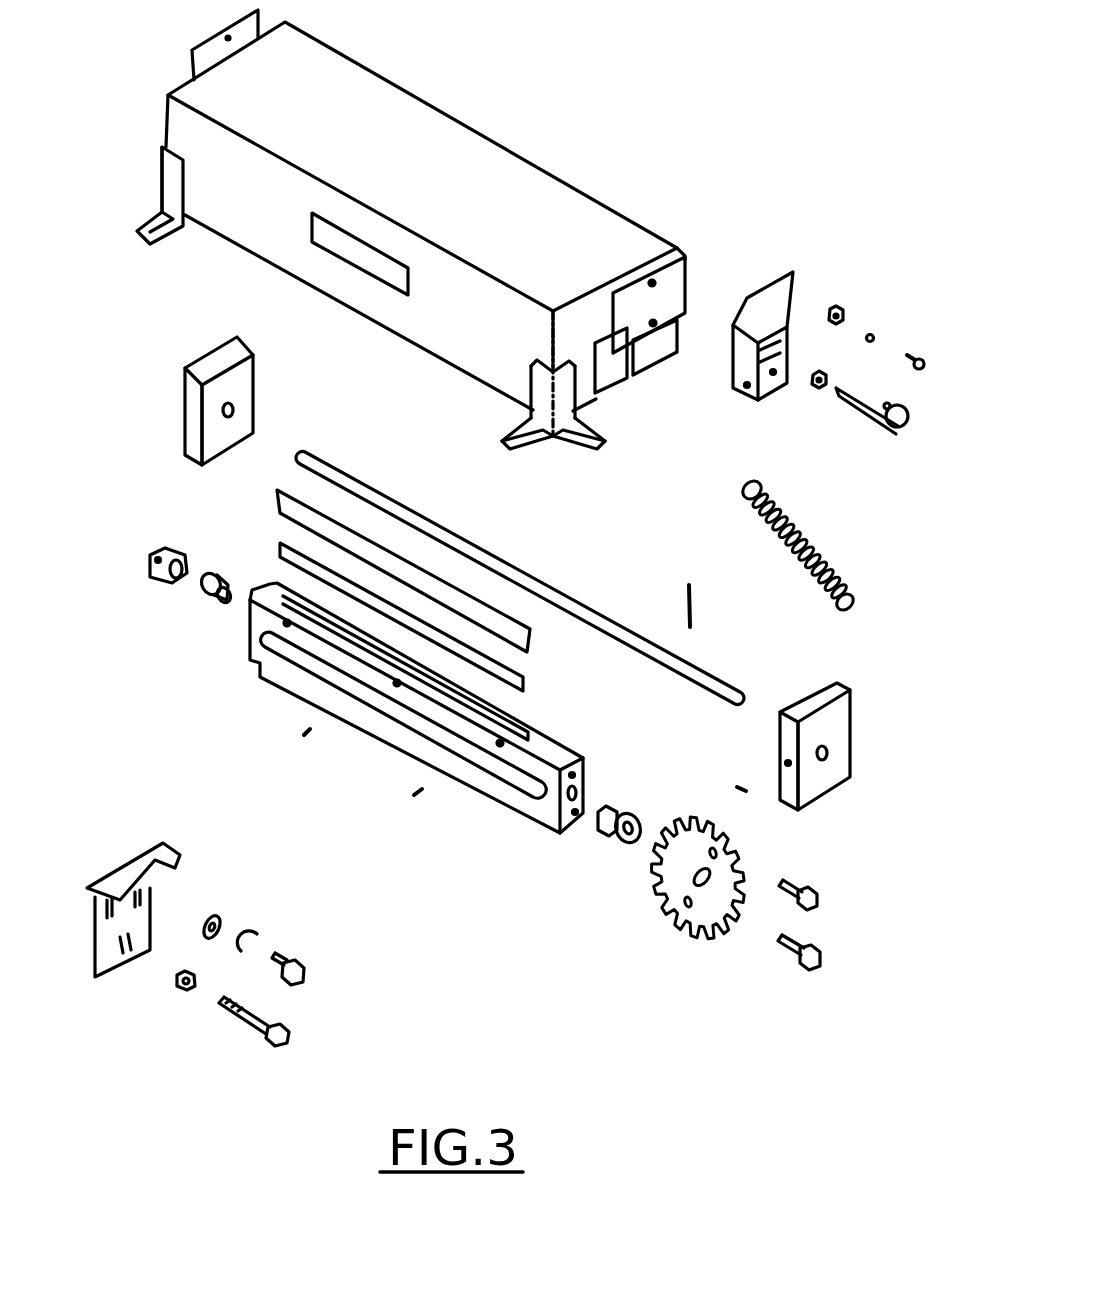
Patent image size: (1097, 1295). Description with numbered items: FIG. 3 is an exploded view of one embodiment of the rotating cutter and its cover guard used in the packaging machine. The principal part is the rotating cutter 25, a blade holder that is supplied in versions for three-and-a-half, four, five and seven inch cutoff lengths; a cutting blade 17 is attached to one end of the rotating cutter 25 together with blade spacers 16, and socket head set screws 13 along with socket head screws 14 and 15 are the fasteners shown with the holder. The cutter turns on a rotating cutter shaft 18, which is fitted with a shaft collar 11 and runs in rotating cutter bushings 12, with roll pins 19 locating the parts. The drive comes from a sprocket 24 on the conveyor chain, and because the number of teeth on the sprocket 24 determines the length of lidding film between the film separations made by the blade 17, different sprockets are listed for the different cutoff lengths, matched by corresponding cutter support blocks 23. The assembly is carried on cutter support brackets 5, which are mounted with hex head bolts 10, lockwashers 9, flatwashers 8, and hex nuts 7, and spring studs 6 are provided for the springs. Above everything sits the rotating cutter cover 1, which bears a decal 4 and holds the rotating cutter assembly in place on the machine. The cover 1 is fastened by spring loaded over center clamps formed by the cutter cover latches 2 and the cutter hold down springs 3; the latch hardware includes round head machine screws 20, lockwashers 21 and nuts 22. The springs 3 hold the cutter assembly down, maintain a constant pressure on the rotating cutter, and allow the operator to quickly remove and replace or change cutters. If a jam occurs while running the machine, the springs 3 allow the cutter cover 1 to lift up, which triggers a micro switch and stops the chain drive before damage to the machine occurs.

The rotating cutter cover 1 is at (453, 116).
The cutter cover latch 2 is at (767, 280).
The cutter hold down spring 3 is at (745, 480).
The decal 4 is at (312, 241).
The cutter support bracket 5 is at (128, 870).
The spring stud 6 is at (280, 1030).
The hex nut 7 is at (180, 992).
The flatwasher 8 is at (218, 913).
The lockwasher 9 is at (248, 935).
The hex head bolt 10 is at (297, 962).
The shaft collar 11 is at (150, 580).
The rotating cutter bushing 12 is at (200, 603).
The socket head set screw 13 is at (413, 793).
The socket head screw 14 is at (810, 948).
The socket head screw 15 is at (740, 787).
The blade spacer 16 is at (527, 686).
The blade 17 is at (277, 491).
The rotating cutter shaft 18 is at (338, 458).
The roll pin 19 is at (688, 590).
The round head machine screw 20 is at (912, 357).
The lockwasher 21 is at (871, 333).
The nut 22 is at (833, 308).
The cutter support block 23 is at (203, 358).
The sprocket 24 is at (663, 922).
The rotating cutter 25 is at (507, 813).